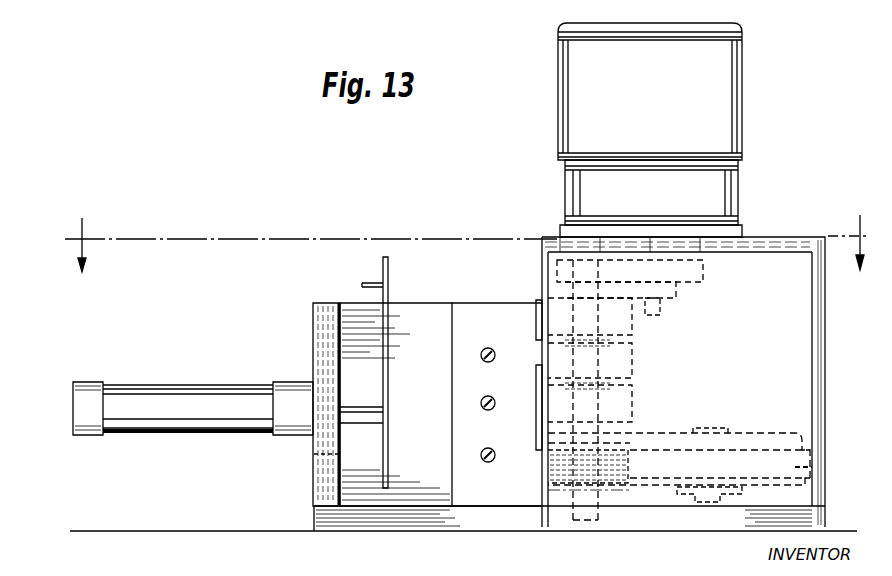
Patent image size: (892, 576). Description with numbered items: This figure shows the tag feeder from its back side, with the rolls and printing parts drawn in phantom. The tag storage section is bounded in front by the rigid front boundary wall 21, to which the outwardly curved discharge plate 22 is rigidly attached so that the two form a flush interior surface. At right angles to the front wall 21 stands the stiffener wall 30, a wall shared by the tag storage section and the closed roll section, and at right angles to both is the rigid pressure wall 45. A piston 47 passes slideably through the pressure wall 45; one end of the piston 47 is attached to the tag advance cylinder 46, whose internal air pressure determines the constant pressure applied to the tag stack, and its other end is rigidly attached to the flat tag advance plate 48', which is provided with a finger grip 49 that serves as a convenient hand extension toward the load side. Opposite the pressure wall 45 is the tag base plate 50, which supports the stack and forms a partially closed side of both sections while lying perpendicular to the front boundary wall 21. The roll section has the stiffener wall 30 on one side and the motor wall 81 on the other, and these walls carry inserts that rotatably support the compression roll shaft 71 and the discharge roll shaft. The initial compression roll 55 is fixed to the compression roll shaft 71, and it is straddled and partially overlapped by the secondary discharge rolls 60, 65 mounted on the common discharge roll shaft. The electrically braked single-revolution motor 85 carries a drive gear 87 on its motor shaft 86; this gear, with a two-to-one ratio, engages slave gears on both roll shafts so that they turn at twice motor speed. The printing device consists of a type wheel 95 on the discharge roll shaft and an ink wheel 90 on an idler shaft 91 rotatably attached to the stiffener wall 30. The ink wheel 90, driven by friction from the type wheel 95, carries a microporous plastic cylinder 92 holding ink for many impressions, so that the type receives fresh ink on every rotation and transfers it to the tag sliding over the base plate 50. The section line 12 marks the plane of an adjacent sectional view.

The section line 12 is at (461, 234).
The front boundary wall 21 is at (431, 403).
The curved discharge plate 22 is at (513, 318).
The stiffener wall 30 is at (426, 508).
The pressure wall 45 is at (322, 328).
The tag advance cylinder 46 is at (182, 398).
The piston 47 is at (369, 408).
The flat tag advance plate 48' is at (409, 369).
The finger grip 49 is at (370, 283).
The tag base plate 50 is at (548, 500).
The compression roll 55 is at (633, 370).
The discharge roll 60 is at (633, 400).
The discharge roll 65 is at (632, 325).
The compression roll shaft 71 is at (591, 522).
The motor wall 81 is at (766, 244).
The motor 85 is at (597, 72).
The motor shaft 86 is at (660, 302).
The drive gear 87 is at (700, 283).
The ink wheel 90 is at (752, 451).
The idler shaft 91 is at (705, 495).
The microporous plastic cylinder 92 is at (812, 465).
The type wheel 95 is at (620, 500).